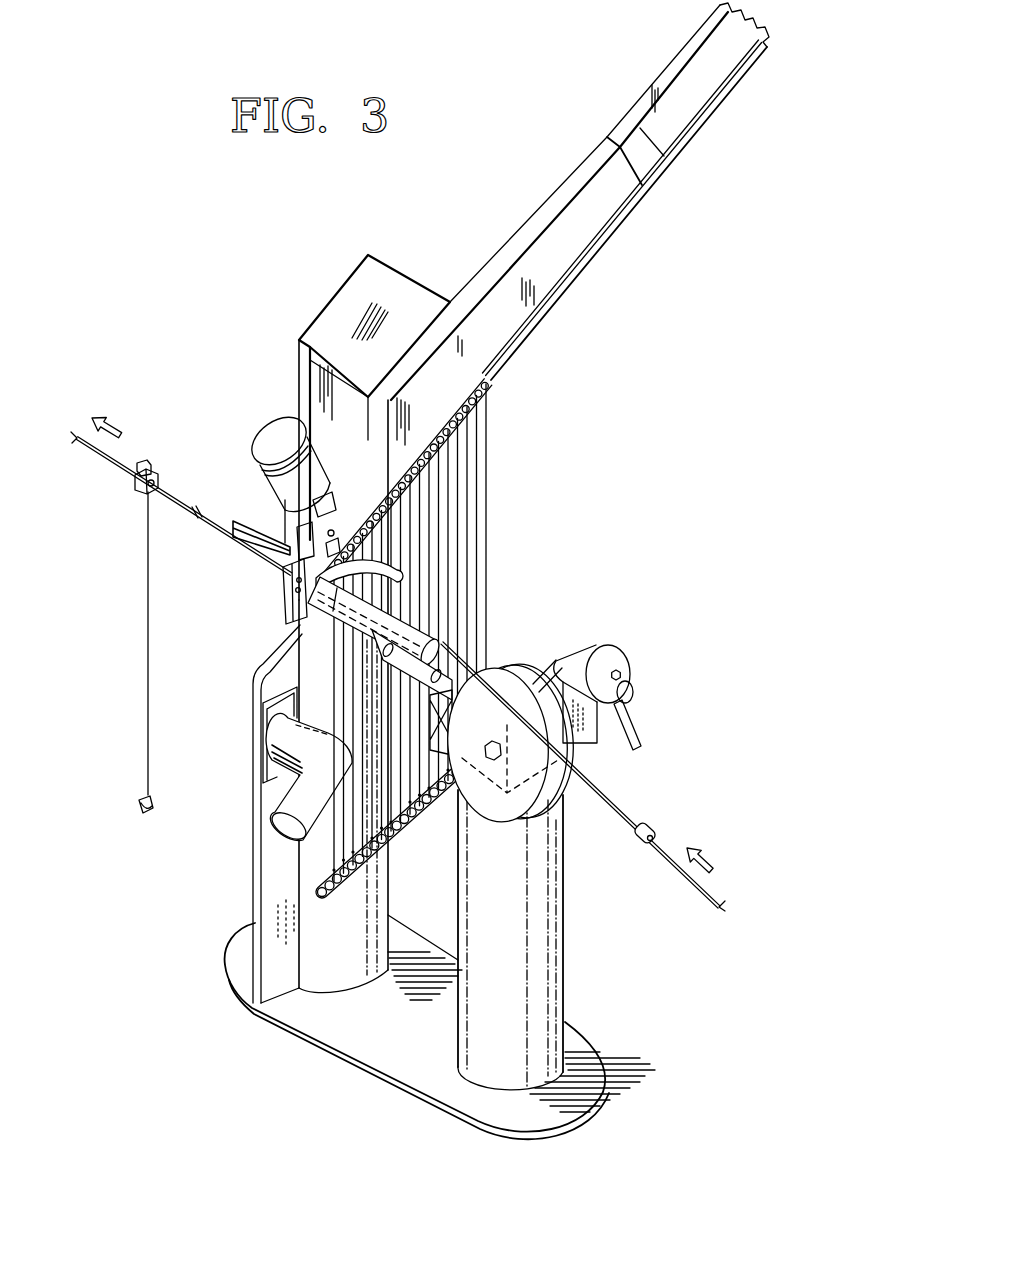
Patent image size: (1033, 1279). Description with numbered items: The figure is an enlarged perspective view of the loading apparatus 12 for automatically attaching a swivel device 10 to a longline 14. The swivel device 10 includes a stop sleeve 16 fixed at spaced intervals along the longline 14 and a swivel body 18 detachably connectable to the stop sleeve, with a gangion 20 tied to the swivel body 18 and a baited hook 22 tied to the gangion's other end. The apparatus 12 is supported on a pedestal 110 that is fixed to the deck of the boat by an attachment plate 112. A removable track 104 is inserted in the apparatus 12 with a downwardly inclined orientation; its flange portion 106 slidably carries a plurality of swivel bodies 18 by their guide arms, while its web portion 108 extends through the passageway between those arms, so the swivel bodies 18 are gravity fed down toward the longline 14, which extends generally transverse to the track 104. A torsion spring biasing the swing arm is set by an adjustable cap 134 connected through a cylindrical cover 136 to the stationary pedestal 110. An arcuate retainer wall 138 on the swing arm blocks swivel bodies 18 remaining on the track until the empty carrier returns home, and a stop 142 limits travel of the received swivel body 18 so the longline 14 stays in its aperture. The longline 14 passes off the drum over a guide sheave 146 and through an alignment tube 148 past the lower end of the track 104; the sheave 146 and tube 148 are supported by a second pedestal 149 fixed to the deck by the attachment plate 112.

The swivel device 10 is at (148, 463).
The apparatus 12 is at (226, 366).
The longline 14 is at (190, 510).
The stop sleeve 16 is at (135, 480).
The swivel body 18 is at (493, 387).
The gangion 20 is at (478, 497).
The hook 22 is at (150, 790).
The track 104 is at (708, 118).
The flange portion 106 is at (657, 173).
The web portion 108 is at (708, 50).
The pedestal 110 is at (370, 900).
The attachment plate 112 is at (373, 1048).
The adjustable cap 134 is at (273, 438).
The cylindrical cover 136 is at (298, 497).
The arcuate retainer wall 138 is at (397, 576).
The stop 142 is at (292, 608).
The guide sheave 146 is at (505, 683).
The alignment tube 148 is at (405, 627).
The second pedestal 149 is at (548, 975).